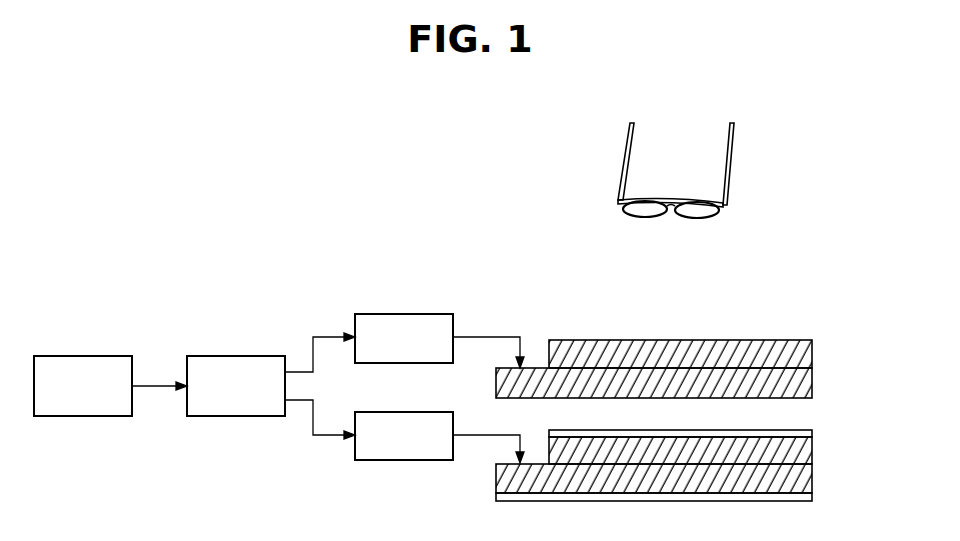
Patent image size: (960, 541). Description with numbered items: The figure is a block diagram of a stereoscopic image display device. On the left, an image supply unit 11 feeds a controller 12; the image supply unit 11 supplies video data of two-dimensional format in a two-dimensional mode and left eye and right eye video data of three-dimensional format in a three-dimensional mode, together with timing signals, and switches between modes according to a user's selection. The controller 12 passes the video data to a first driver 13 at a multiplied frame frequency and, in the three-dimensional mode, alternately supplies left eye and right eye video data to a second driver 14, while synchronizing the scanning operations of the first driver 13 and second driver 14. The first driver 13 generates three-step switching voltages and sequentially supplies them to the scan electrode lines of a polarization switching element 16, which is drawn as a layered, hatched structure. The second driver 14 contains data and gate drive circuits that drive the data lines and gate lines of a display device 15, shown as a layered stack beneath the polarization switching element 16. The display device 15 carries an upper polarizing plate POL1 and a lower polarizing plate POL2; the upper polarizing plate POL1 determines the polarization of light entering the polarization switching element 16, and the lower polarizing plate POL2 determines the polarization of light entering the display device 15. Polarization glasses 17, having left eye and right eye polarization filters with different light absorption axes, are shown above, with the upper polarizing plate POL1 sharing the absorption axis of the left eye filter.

The image supply unit 11 is at (96, 396).
The controller 12 is at (249, 396).
The first driver 13 is at (417, 348).
The second driver 14 is at (417, 446).
The display device 15 is at (702, 467).
The polarization switching element 16 is at (820, 367).
The polarization glasses 17 is at (733, 187).
The upper polarizing plate POL1 is at (812, 430).
The lower polarizing plate POL2 is at (812, 497).